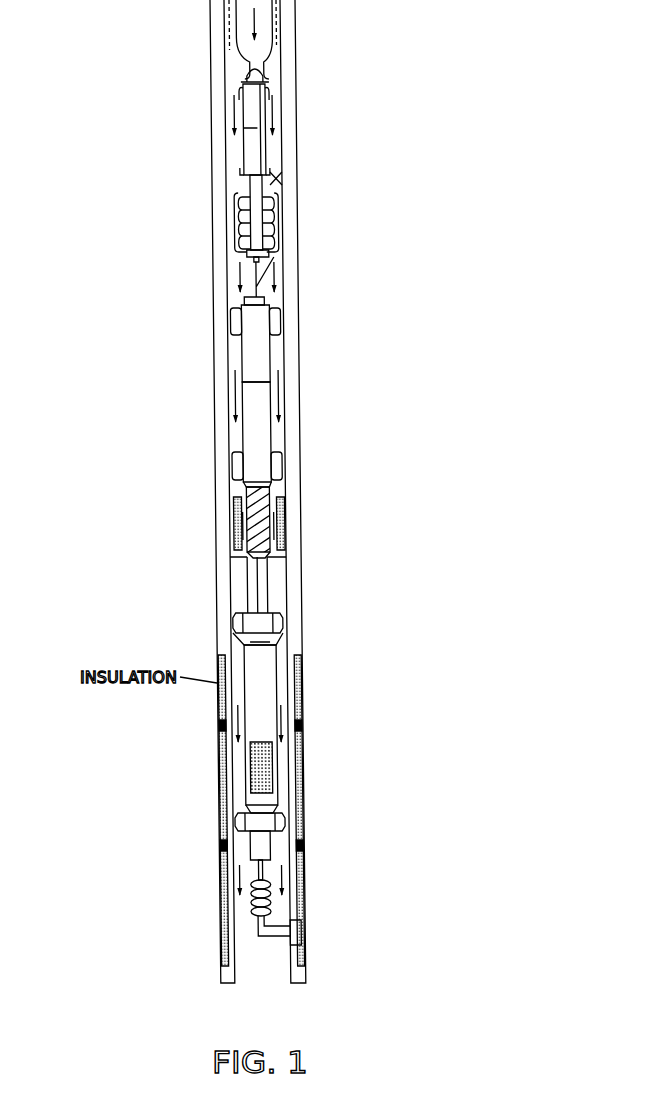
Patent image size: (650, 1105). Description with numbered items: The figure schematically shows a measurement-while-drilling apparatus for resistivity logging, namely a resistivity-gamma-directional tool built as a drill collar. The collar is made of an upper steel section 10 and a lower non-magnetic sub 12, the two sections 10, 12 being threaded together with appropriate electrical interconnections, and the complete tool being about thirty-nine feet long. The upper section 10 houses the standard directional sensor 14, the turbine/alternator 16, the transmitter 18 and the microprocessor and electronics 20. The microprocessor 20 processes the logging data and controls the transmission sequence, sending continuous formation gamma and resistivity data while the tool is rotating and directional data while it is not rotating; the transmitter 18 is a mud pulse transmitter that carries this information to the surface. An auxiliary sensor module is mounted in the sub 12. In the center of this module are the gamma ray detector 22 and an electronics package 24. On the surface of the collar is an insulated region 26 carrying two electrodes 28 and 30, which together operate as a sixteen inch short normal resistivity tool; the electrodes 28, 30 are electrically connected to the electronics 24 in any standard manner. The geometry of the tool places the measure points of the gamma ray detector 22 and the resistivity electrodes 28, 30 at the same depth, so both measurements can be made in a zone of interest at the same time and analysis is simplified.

The upper steel section 10 is at (293, 407).
The lower non-magnetic sub 12 is at (297, 613).
The directional sensor 14 is at (268, 430).
The turbine/alternator 16 is at (259, 157).
The transmitter 18 is at (258, 97).
The microprocessor and electronics 20 is at (265, 352).
The gamma ray detector 22 is at (264, 757).
The electronics package 24 is at (270, 665).
The insulated region 26 is at (302, 737).
The electrode 28 is at (215, 721).
The electrode 30 is at (203, 833).